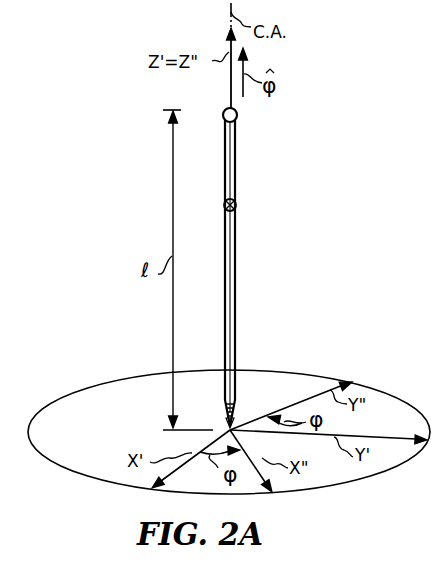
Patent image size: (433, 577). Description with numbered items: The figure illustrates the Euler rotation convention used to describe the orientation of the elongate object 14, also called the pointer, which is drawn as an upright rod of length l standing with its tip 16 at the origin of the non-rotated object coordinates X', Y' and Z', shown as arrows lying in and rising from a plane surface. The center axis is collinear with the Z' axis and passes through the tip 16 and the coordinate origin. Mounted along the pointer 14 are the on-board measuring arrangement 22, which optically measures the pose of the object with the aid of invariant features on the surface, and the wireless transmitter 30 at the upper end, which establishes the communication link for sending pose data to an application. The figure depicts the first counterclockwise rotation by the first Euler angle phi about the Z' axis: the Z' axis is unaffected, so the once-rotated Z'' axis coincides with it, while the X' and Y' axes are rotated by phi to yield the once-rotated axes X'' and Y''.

The elongate object 14 is at (236, 262).
The tip 16 is at (238, 419).
The on-board measuring arrangement 22 is at (236, 205).
The wireless transmitter 30 is at (237, 117).